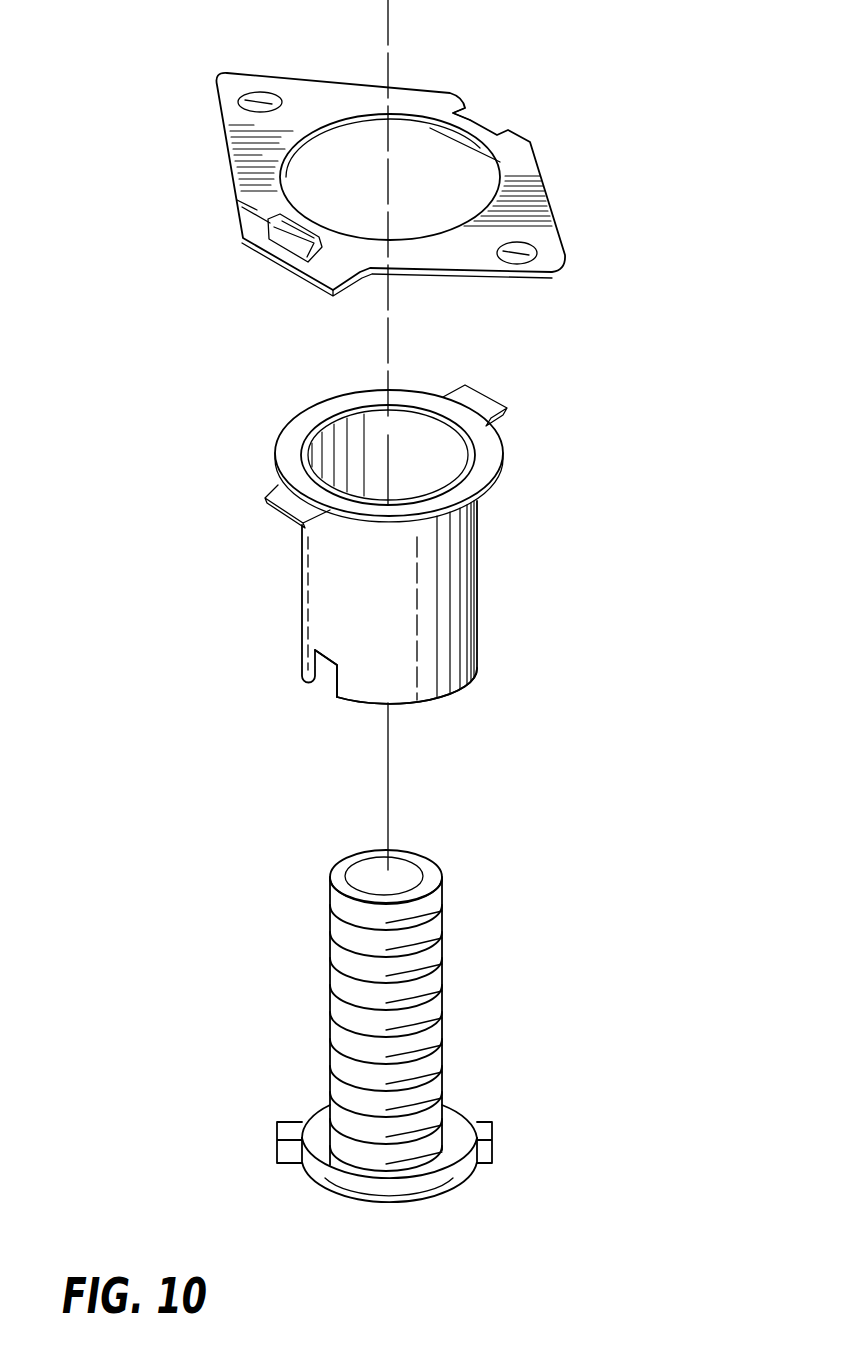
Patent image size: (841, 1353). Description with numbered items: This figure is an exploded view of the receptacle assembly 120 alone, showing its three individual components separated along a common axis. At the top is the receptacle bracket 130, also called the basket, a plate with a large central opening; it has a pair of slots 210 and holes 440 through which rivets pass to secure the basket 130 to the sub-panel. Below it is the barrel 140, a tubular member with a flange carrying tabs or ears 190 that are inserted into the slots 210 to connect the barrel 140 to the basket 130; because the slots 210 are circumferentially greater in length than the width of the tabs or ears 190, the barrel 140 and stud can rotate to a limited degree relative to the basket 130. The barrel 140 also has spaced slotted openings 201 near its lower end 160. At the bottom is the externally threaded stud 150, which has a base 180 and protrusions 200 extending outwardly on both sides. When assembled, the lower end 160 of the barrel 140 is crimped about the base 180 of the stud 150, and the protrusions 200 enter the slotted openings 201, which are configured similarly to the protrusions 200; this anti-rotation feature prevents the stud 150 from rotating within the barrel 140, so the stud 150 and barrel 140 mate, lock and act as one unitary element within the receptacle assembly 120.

The receptacle assembly 120 is at (402, 627).
The receptacle bracket 130 is at (377, 186).
The barrel 140 is at (350, 576).
The externally threaded stud 150 is at (363, 992).
The lower end of barrel 160 is at (358, 727).
The base of stud 180 is at (364, 1104).
The tabs or ears 190 is at (484, 400).
The protrusions 200 is at (424, 1084).
The slotted openings 201 is at (328, 678).
The slots 210 is at (290, 238).
The holes 440 is at (256, 86).